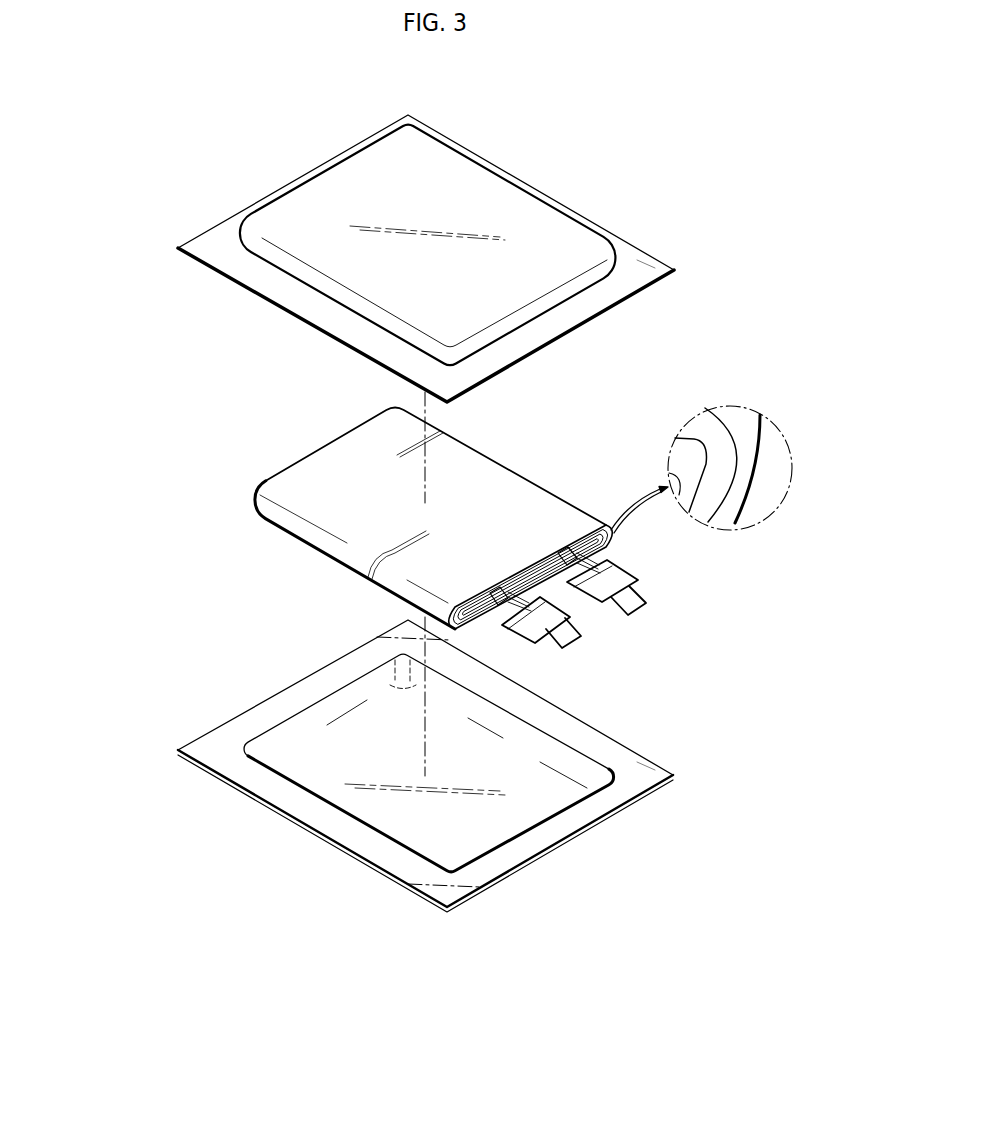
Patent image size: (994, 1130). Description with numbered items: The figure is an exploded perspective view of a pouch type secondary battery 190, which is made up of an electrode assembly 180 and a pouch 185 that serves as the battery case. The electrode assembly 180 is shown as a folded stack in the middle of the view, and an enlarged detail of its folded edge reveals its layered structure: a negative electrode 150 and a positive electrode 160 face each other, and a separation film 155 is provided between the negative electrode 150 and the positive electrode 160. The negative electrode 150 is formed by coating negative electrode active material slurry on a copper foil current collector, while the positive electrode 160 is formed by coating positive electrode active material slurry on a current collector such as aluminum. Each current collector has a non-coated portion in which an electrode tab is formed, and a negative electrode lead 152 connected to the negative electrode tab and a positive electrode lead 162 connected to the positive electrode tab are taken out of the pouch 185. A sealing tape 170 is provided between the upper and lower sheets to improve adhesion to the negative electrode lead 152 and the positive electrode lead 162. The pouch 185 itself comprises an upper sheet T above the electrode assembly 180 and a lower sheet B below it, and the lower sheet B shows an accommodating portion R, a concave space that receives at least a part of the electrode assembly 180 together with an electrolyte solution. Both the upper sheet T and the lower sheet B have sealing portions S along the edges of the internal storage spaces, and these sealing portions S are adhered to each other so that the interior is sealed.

The secondary battery 190 is at (646, 136).
The pouch 185 is at (129, 419).
The upper sheet T is at (239, 285).
The lower sheet B is at (239, 721).
The accommodating portion R is at (353, 728).
The sealing portion S is at (637, 260).
The electrode assembly 180 is at (600, 487).
The negative electrode 150 is at (682, 458).
The separation film 155 is at (713, 438).
The positive electrode 160 is at (745, 432).
The sealing tape 170 is at (627, 577).
The positive electrode lead 162 is at (637, 598).
The negative electrode lead 152 is at (572, 637).